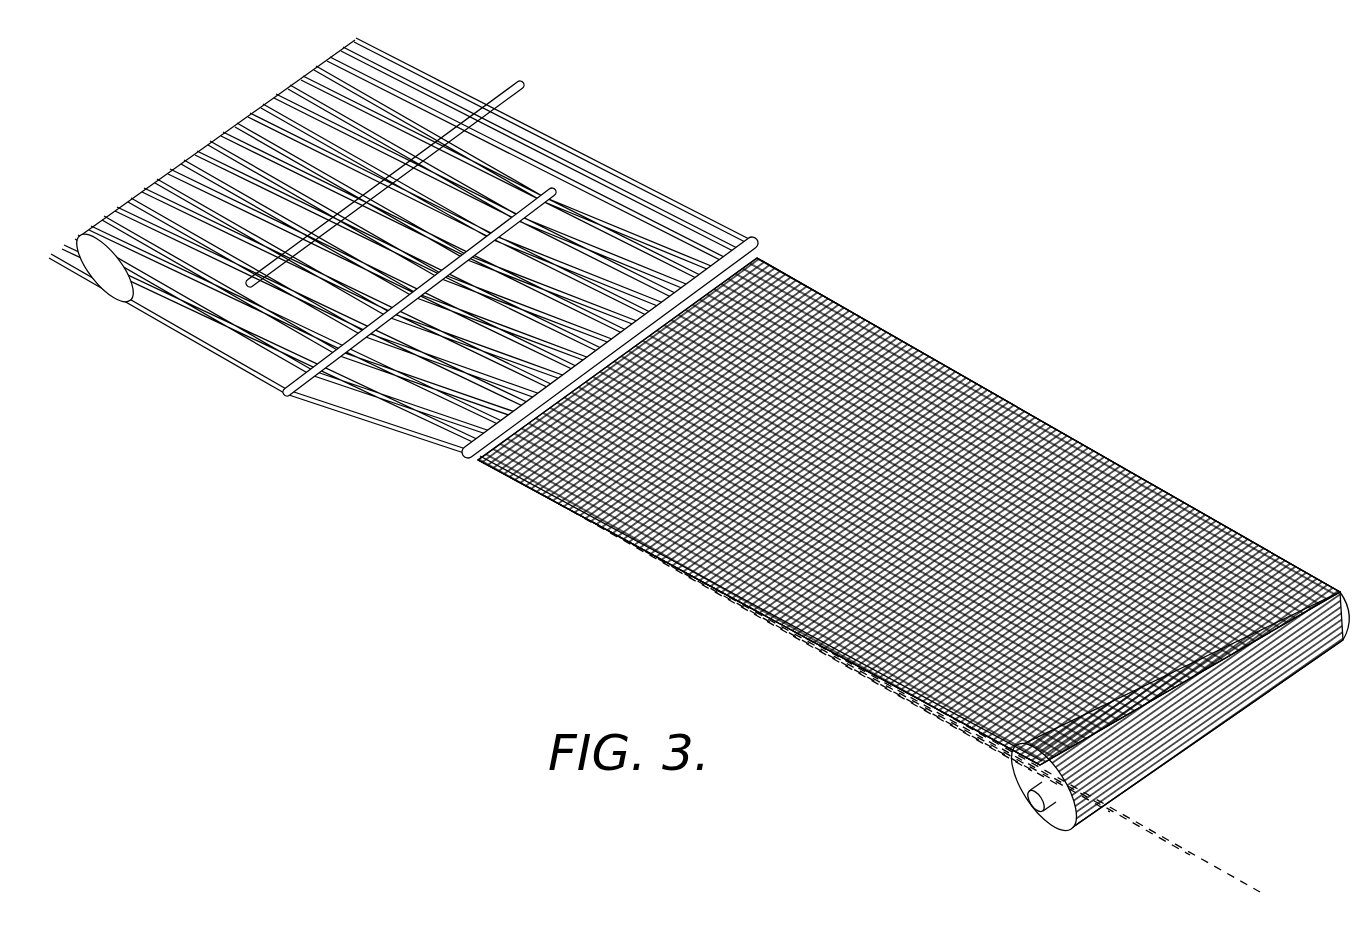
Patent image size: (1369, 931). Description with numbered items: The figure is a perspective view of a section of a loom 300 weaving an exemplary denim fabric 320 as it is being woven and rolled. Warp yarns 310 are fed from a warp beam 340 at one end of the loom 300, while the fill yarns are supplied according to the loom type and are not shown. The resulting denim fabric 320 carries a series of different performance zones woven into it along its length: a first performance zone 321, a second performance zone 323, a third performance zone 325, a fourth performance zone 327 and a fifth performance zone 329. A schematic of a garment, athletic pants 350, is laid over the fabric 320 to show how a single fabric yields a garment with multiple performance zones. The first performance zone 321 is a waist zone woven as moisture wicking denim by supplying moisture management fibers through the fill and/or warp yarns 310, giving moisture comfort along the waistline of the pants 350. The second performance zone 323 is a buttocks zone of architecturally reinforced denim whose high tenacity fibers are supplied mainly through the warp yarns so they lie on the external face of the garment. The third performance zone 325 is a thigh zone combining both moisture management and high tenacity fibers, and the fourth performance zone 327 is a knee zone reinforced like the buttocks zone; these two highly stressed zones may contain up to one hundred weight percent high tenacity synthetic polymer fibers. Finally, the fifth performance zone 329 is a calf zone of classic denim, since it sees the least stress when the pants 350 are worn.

The loom 300 is at (698, 465).
The warp yarns 310 is at (655, 198).
The denim fabric 320 is at (1165, 481).
The first performance zone 321 is at (541, 488).
The second performance zone 323 is at (590, 516).
The third performance zone 325 is at (686, 571).
The fourth performance zone 327 is at (790, 626).
The fifth performance zone 329 is at (936, 706).
The warp beam 340 is at (90, 281).
The athletic pants 350 is at (1254, 588).